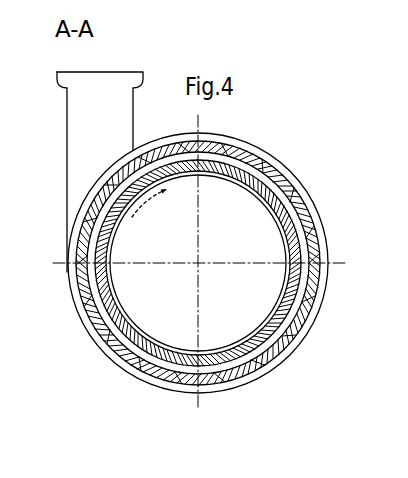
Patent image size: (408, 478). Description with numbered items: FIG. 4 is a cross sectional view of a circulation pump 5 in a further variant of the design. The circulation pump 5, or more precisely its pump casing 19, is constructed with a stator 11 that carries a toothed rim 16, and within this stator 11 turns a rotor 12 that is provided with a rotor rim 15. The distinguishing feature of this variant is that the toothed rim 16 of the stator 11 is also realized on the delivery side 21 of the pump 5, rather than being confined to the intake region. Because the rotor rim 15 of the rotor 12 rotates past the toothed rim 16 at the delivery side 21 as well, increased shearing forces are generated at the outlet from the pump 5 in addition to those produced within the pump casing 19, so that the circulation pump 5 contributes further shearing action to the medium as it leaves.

The circulation pump 5 is at (289, 147).
The stator 11 is at (214, 388).
The rotor 12 is at (224, 285).
The rotor rim 15 is at (104, 321).
The toothed rim 16 is at (129, 366).
The pump casing 19 is at (65, 138).
The delivery side 21 is at (113, 117).